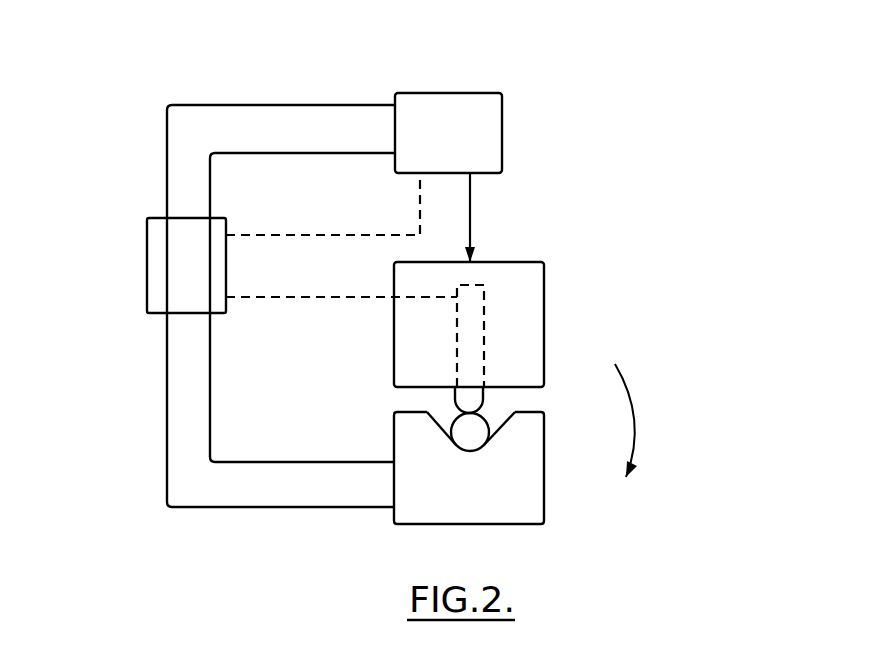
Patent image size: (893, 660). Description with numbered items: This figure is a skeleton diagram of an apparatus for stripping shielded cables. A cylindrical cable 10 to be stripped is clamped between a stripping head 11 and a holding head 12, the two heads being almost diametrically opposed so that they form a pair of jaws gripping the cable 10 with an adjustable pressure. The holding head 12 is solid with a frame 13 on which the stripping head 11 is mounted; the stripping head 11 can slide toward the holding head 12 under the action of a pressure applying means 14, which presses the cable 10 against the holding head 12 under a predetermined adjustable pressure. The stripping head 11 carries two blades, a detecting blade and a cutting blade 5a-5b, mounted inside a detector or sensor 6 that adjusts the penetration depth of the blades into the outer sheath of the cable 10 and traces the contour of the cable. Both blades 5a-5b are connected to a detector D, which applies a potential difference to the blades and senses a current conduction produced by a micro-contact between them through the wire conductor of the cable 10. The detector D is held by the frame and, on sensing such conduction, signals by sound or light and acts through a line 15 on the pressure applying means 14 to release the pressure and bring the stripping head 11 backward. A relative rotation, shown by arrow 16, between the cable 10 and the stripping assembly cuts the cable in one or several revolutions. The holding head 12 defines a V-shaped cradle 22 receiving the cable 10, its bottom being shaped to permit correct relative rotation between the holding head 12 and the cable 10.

The frame 13 is at (160, 387).
The pressure applying means 14 is at (487, 117).
The detector D is at (147, 252).
The line 15 is at (340, 235).
The stripping head 11 is at (552, 289).
The detecting blade and cutting blade 5a-5b is at (483, 343).
The detector or sensor 6 is at (477, 393).
The cylindrical cable 10 is at (480, 432).
The holding head 12 is at (552, 507).
The V-shaped cradle 22 is at (433, 419).
The arrow (relative rotation) 16 is at (638, 438).